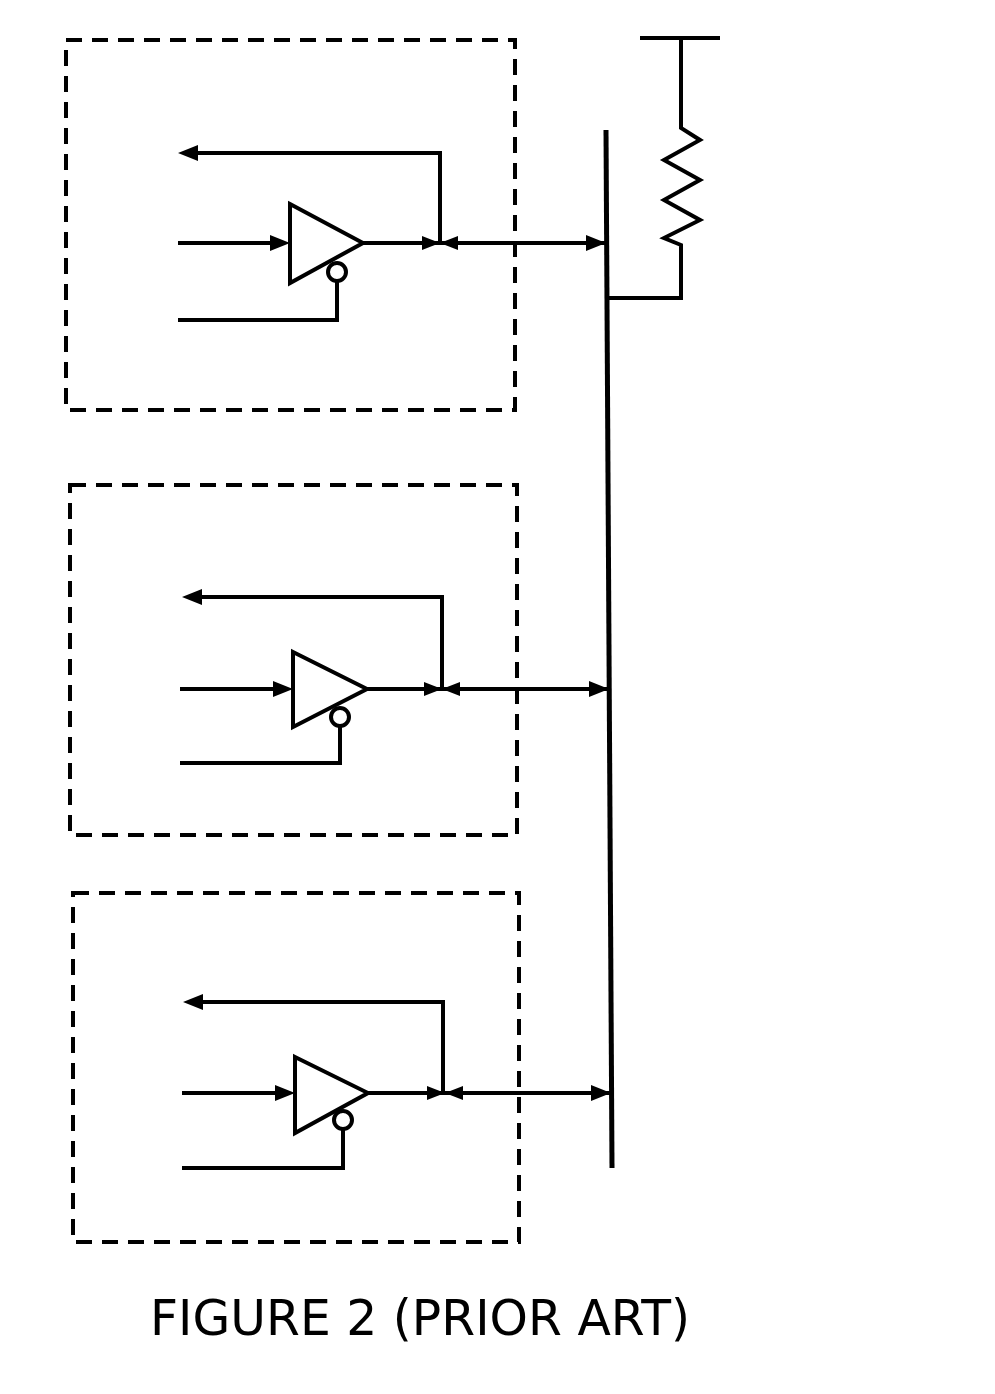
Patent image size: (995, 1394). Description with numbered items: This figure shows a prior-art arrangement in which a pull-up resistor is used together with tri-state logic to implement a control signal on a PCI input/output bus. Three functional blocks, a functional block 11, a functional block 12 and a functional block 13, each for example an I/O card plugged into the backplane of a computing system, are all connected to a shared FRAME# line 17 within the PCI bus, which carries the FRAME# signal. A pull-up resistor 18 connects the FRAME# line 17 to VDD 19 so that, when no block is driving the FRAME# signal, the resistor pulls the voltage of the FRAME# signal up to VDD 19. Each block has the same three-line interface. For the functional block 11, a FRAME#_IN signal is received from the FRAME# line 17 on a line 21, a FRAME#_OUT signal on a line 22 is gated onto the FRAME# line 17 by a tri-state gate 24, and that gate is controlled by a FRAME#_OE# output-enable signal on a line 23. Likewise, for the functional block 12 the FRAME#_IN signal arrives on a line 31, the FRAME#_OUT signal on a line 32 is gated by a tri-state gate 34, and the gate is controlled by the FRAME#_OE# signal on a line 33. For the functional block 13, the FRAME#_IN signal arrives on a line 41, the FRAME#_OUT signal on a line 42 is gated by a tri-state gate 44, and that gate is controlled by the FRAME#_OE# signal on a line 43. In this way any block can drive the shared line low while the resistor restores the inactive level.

The functional block 11 is at (383, 413).
The functional block 12 is at (373, 838).
The functional block 13 is at (318, 1241).
The FRAME# line 17 is at (609, 390).
The pull-up resistor 18 is at (703, 203).
The VDD 19 is at (639, 42).
The line 21 is at (233, 155).
The line 22 is at (196, 246).
The line 23 is at (196, 323).
The tri-state gate 24 is at (333, 226).
The line 31 is at (235, 599).
The line 32 is at (197, 692).
The line 33 is at (197, 766).
The tri-state gate 34 is at (337, 674).
The line 41 is at (238, 1004).
The line 42 is at (200, 1096).
The line 43 is at (200, 1171).
The tri-state gate 44 is at (340, 1074).